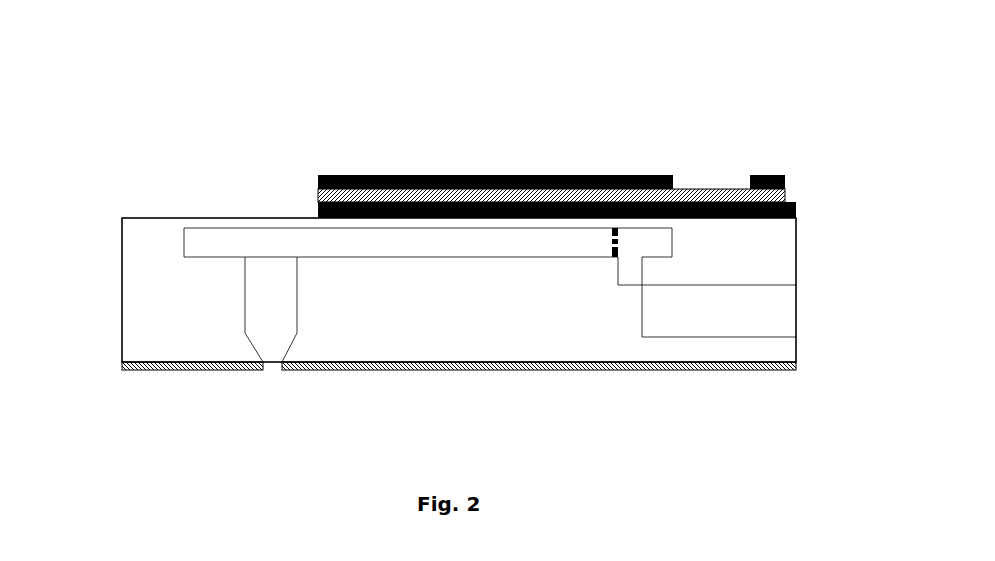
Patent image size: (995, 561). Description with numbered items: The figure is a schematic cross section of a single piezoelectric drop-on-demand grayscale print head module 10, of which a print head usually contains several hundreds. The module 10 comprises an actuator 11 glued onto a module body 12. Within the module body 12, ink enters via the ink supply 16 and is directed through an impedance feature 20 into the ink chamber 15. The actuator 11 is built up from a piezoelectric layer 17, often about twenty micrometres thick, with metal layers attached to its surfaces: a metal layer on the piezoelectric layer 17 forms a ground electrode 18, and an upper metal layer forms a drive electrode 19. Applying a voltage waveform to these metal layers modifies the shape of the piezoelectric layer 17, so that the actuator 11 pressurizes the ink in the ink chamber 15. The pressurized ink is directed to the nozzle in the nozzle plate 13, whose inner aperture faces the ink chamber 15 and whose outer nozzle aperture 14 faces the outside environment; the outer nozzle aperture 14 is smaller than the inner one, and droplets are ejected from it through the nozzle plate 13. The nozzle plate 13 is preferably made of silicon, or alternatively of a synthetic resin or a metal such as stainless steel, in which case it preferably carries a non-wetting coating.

The print head module 10 is at (451, 249).
The actuator 11 is at (546, 158).
The module body 12 is at (495, 346).
The nozzle plate 13 is at (167, 364).
The outer nozzle aperture 14 is at (273, 364).
The ink chamber 15 is at (428, 256).
The ink supply 16 is at (719, 311).
The piezoelectric layer 17 is at (686, 197).
The ground electrode 18 is at (318, 215).
The drive electrode 19 is at (363, 175).
The impedance feature 20 is at (612, 257).